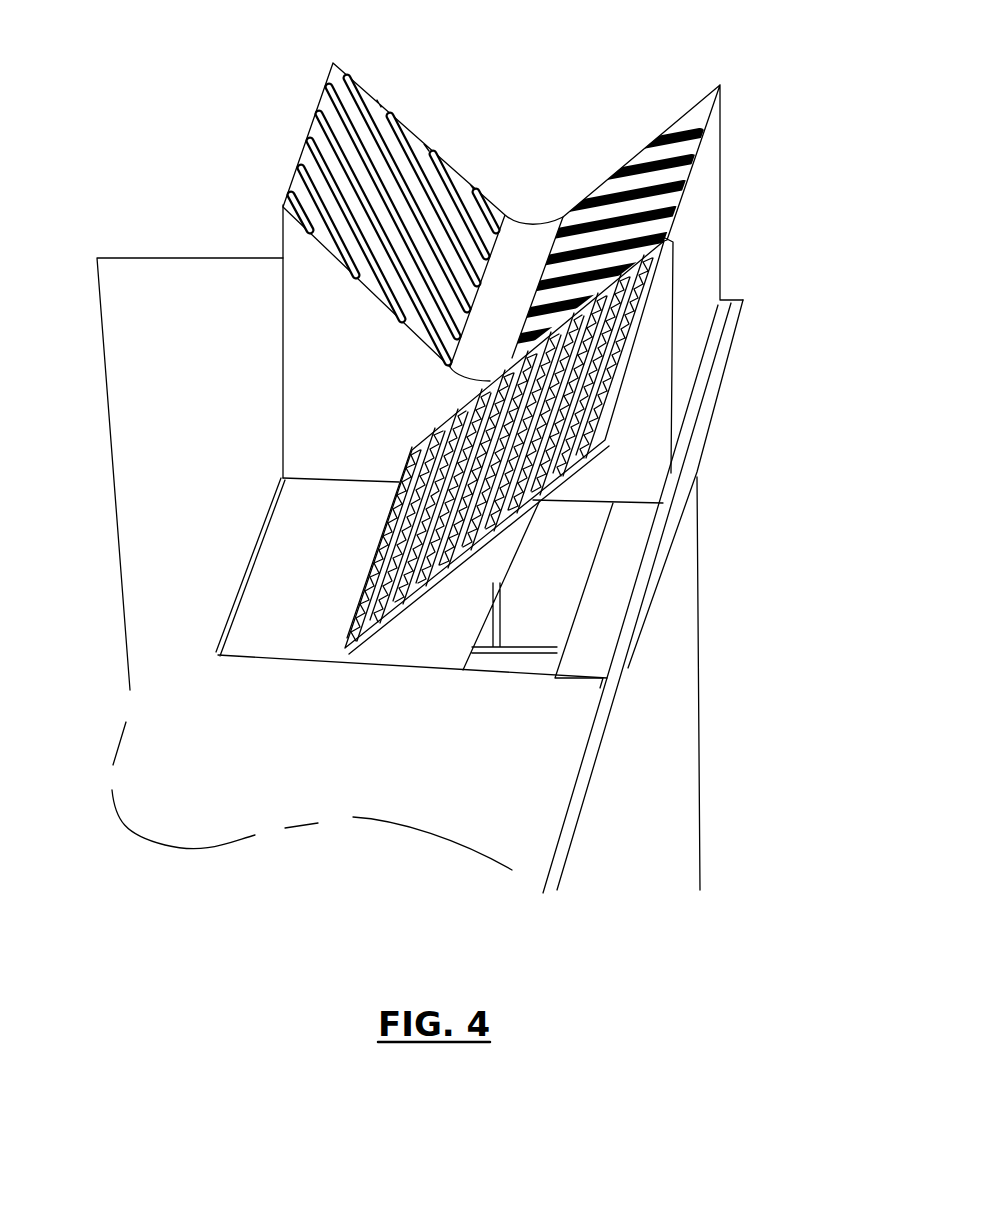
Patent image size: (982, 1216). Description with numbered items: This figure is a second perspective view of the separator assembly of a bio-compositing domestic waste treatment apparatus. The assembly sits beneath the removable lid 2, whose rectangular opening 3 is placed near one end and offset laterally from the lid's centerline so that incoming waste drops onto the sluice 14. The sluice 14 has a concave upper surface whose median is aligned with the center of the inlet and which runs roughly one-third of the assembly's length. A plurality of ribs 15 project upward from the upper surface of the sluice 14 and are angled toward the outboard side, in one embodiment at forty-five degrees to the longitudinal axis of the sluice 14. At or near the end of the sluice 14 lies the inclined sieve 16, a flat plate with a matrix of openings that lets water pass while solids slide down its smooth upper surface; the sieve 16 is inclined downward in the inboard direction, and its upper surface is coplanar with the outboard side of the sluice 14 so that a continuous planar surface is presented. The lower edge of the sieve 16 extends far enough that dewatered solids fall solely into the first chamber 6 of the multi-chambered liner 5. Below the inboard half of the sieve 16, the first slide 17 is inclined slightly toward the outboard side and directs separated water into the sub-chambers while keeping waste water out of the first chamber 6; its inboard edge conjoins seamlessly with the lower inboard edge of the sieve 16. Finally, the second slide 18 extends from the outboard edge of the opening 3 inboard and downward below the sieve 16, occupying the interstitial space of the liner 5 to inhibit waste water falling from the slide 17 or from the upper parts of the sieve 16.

The removable lid 2 is at (135, 340).
The rectangular opening 3 is at (270, 470).
The multi-chambered liner 5 is at (647, 830).
The first chamber 6 is at (298, 620).
The sluice 14 is at (508, 285).
The ribs 15 is at (645, 170).
The inclined sieve 16 is at (632, 327).
The first slide 17 is at (473, 585).
The second slide 18 is at (597, 628).